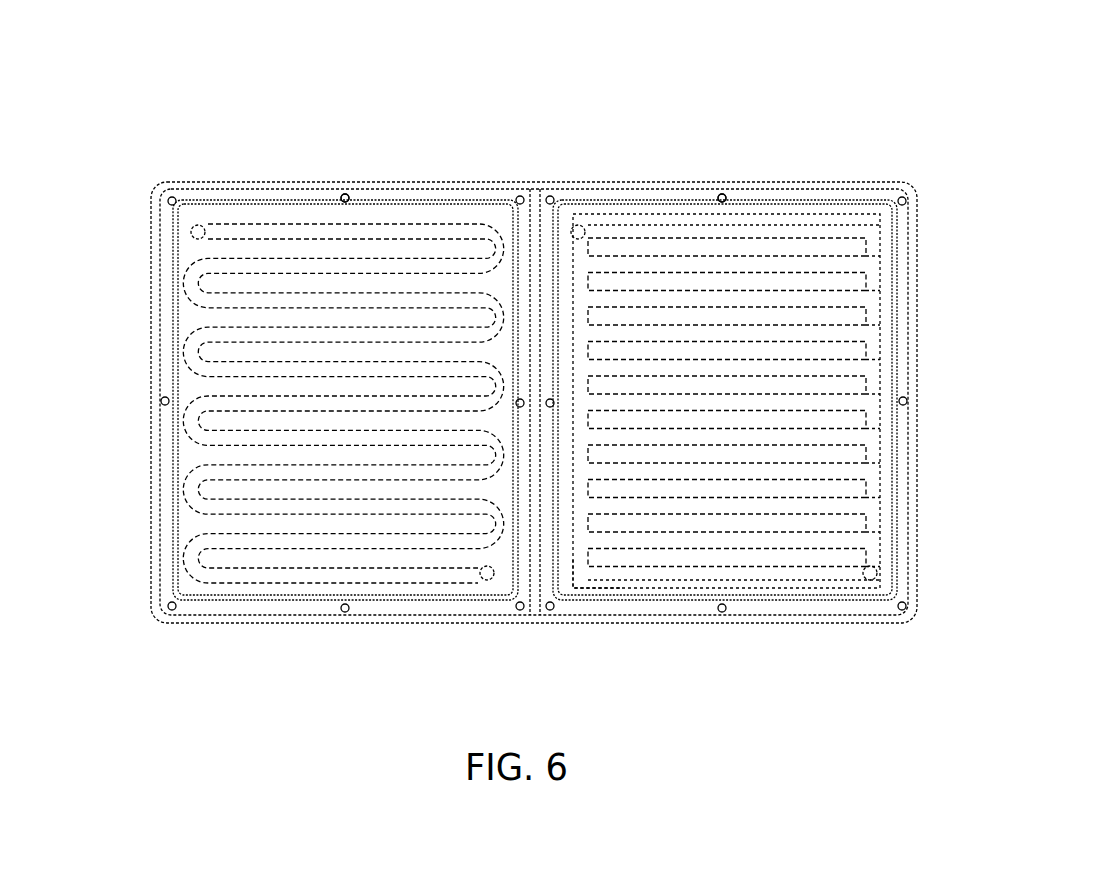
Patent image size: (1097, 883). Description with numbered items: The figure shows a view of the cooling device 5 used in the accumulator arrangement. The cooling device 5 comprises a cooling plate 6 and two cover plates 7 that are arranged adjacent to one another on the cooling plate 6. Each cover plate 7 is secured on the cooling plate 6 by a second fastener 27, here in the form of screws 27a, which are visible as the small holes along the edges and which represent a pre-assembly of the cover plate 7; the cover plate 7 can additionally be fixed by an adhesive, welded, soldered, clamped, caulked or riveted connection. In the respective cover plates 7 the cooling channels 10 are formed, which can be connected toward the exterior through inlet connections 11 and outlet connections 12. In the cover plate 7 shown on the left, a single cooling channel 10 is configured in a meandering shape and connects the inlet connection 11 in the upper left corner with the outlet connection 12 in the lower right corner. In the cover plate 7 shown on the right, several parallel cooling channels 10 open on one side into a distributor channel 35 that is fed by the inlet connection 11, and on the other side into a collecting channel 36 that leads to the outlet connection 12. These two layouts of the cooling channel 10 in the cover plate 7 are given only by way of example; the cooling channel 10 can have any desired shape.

The cooling device 5 is at (886, 131).
The cooling plate 6 is at (532, 190).
The cover plate 7 is at (411, 205).
The cooling channel 10 is at (290, 232).
The inlet connection 11 is at (198, 226).
The outlet connection 12 is at (487, 580).
The second fastener 27 is at (160, 401).
The screws 27a is at (533, 198).
The distributor channel 35 is at (586, 562).
The collecting channel 36 is at (868, 492).